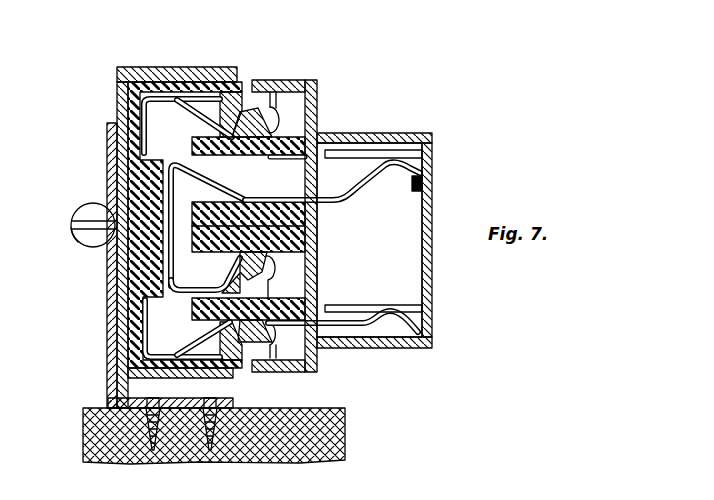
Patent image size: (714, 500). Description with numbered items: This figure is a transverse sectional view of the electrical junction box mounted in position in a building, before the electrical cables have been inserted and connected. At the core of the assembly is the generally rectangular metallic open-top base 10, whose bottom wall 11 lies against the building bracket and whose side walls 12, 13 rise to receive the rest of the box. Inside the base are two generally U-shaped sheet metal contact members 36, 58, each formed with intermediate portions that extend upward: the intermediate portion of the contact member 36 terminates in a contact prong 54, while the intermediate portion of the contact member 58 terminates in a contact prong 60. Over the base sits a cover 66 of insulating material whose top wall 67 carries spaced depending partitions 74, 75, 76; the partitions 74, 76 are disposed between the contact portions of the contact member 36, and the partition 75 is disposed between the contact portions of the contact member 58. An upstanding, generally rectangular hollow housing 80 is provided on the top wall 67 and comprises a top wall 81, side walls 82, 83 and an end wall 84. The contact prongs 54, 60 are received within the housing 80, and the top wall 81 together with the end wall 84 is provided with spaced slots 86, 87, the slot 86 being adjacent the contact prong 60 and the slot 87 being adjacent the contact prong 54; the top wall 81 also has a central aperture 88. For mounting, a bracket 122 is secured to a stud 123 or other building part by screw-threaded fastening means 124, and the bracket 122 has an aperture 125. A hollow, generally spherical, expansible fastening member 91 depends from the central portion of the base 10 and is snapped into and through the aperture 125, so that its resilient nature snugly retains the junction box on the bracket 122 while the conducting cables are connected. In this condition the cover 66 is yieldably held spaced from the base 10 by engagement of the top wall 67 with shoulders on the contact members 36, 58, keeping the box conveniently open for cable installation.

The base 10 is at (146, 212).
The bottom wall 11 is at (117, 98).
The side wall 12 is at (153, 67).
The side wall 13 is at (200, 387).
The contact member 36 is at (152, 145).
The contact prong 54 is at (360, 327).
The contact member 58 is at (175, 202).
The contact prong 60 is at (350, 188).
The cover 66 is at (308, 203).
The top wall 67 is at (318, 102).
The partition 74 is at (282, 158).
The partition 75 is at (205, 262).
The partition 76 is at (284, 298).
The housing 80 is at (395, 230).
The top wall 81 is at (432, 202).
The side wall 82 is at (383, 133).
The side wall 83 is at (402, 348).
The end wall 84 is at (372, 272).
The slot 86 is at (430, 155).
The slot 87 is at (432, 310).
The central aperture 88 is at (422, 231).
The fastening member 91 is at (78, 238).
The bracket 122 is at (108, 360).
The stud 123 is at (83, 433).
The fastening means 124 is at (157, 450).
The aperture 125 is at (106, 262).